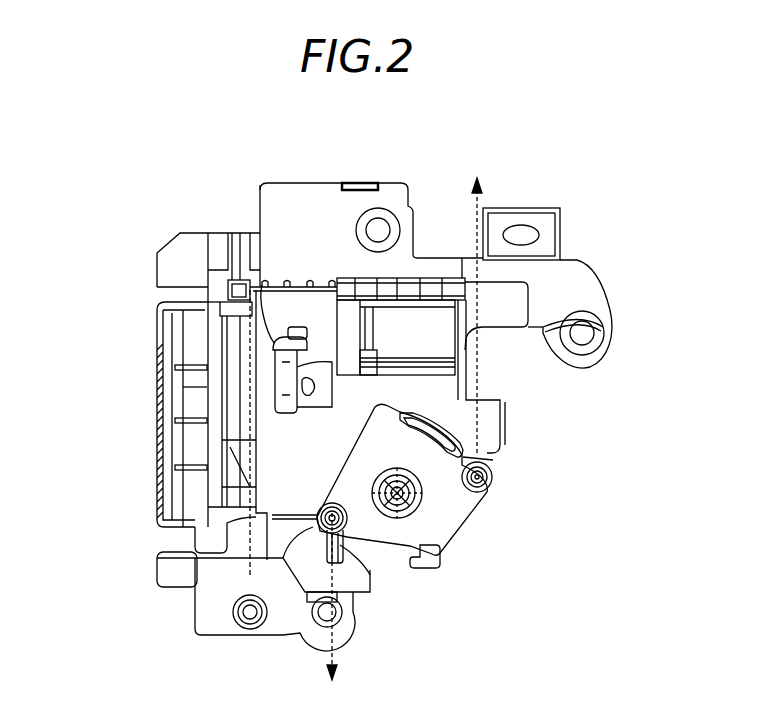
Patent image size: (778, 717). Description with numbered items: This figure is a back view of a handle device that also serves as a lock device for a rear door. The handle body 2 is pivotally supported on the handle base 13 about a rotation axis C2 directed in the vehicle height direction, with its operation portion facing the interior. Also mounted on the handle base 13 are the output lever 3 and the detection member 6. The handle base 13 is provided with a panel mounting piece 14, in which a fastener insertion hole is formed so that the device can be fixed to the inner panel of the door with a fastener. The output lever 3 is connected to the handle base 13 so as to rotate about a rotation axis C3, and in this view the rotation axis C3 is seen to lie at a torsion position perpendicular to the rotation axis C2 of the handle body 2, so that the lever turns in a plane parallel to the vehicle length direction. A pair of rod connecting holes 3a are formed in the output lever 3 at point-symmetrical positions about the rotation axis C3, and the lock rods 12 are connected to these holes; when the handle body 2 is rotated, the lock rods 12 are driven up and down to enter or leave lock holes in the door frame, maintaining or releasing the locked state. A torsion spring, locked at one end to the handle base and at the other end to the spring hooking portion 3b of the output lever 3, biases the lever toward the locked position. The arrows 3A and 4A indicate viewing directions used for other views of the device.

The handle body 2 is at (172, 333).
The output lever 3 is at (457, 508).
The rod connecting holes 3a is at (497, 481).
The spring hooking portion 3b is at (422, 573).
The detection member 6 is at (274, 343).
The lock rods 12 is at (480, 193).
The handle base 13 is at (202, 618).
The panel mounting piece 14 is at (580, 277).
The rotation axis of the handle body C2 is at (257, 563).
The rotation axis of the output lever C3 is at (447, 558).
The view direction 3A is at (110, 425).
The view direction 4A is at (592, 425).